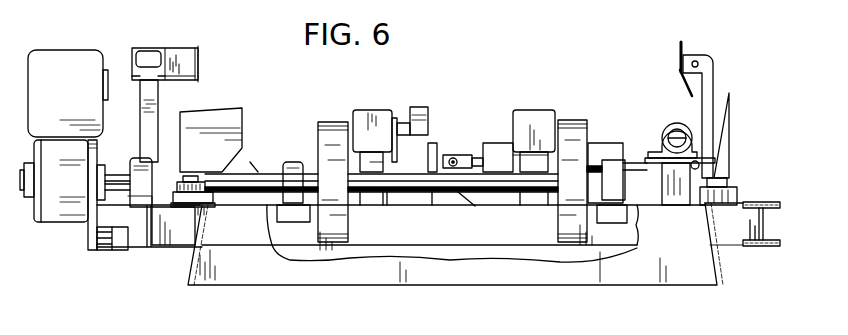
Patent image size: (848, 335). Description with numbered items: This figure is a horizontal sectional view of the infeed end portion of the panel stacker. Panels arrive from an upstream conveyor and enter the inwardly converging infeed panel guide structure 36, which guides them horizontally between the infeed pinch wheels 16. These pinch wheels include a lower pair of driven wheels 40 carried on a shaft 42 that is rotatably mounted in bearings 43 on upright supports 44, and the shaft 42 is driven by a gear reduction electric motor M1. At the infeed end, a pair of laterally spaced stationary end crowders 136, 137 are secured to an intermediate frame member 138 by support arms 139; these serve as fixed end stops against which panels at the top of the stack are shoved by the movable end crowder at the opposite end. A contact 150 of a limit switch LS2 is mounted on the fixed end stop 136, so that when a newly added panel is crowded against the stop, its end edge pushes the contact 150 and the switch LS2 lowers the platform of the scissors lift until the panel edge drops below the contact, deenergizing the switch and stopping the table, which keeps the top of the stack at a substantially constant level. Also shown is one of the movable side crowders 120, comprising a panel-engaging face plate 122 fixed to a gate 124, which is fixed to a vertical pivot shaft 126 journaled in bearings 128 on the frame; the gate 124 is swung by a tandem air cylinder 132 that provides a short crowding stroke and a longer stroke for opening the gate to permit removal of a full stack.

The gear reduction electric motor M1 is at (78, 104).
The infeed pinch wheels 16 is at (326, 248).
The infeed panel guide structure 36 is at (242, 286).
The driven wheels 40 is at (318, 138).
The shaft 42 is at (258, 174).
The bearings 43 is at (303, 160).
The upright supports 44 is at (293, 217).
The movable side crowders 120 is at (676, 59).
The panel-engaging face plate 122 is at (678, 72).
The gate 124 is at (713, 78).
The vertical pivot shaft 126 is at (664, 134).
The bearings 128 is at (676, 124).
The tandem air cylinder 132 is at (604, 140).
The stationary end crowder 136 is at (372, 110).
The stationary end crowder 137 is at (531, 110).
The intermediate frame member 138 is at (458, 236).
The support arms 139 is at (394, 165).
The contact 150 is at (428, 102).
The limit switch LS2 is at (431, 131).